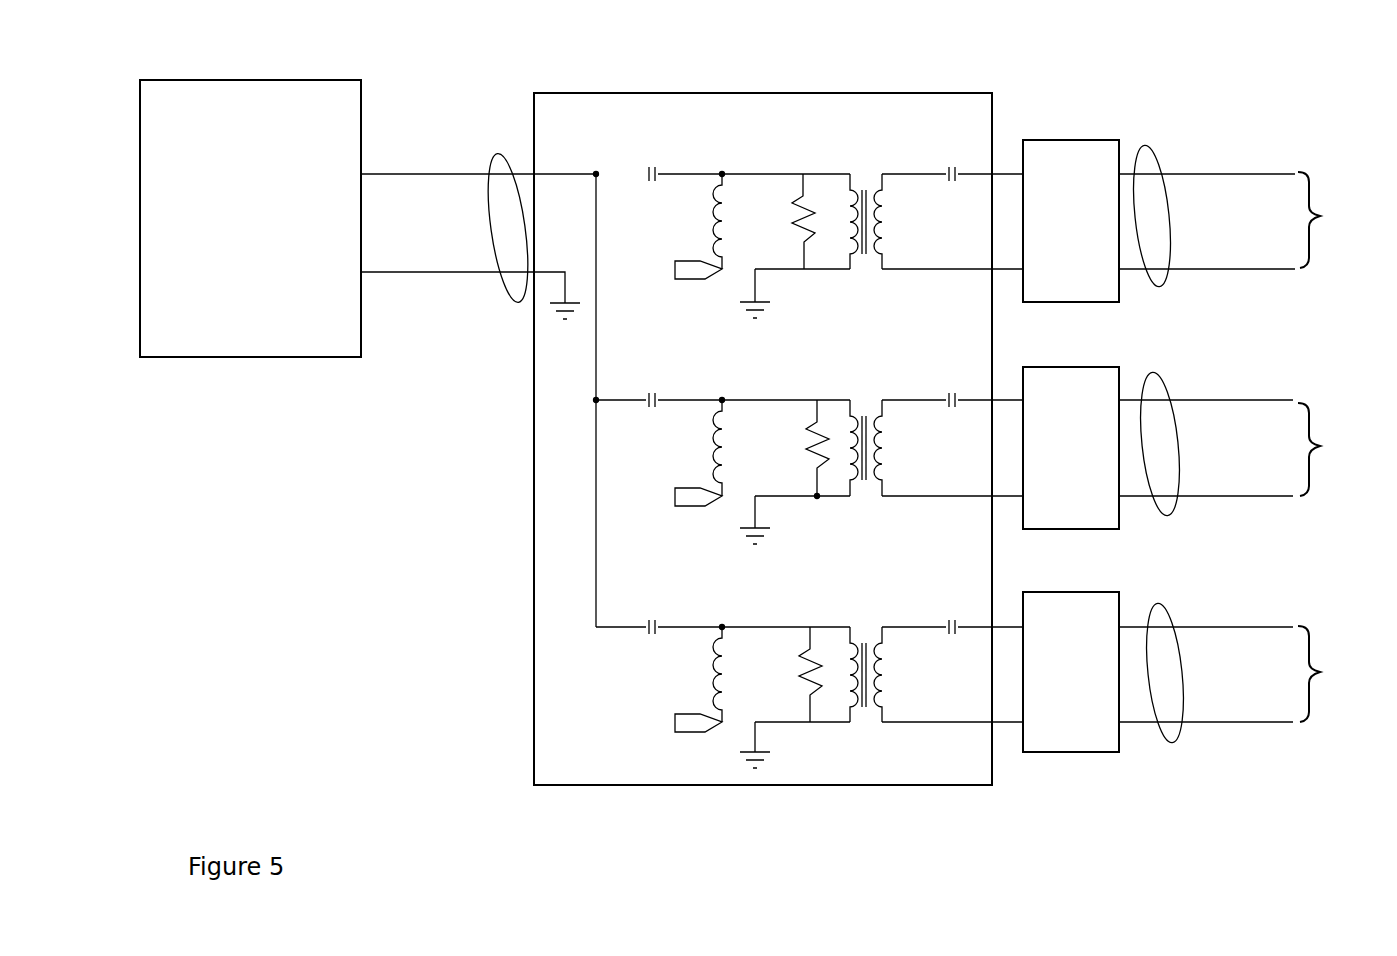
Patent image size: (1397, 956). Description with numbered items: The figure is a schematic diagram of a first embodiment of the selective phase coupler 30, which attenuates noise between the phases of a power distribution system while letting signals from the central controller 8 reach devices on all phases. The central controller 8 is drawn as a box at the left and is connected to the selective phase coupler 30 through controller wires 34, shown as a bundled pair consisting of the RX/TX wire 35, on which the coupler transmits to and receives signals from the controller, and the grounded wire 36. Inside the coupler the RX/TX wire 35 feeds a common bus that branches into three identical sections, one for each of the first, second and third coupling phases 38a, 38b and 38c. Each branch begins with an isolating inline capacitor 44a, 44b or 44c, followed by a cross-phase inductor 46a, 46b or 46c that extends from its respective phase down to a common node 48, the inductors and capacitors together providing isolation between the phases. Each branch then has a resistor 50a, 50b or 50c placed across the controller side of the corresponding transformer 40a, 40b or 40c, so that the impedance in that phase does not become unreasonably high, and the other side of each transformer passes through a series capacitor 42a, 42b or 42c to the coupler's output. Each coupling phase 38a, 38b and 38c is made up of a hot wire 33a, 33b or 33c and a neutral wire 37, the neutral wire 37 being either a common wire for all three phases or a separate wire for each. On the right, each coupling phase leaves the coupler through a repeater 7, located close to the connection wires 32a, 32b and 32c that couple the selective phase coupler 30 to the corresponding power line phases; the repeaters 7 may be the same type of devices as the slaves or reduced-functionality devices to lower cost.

The repeater 7 is at (1083, 237).
The central controller 8 is at (253, 232).
The selective phase coupler 30 is at (992, 93).
The connection wire 32a is at (1160, 150).
The connection wire 32b is at (1168, 373).
The connection wire 32c is at (1172, 606).
The hot wire 33a is at (1268, 173).
The hot wire 33b is at (1282, 398).
The hot wire 33c is at (1283, 622).
The controller wires 34 is at (510, 152).
The RX/TX wire 35 is at (381, 173).
The grounded wire 36 is at (387, 275).
The neutral wire 37 is at (1275, 272).
The first coupling phase 38a is at (1334, 220).
The second coupling phase 38b is at (1333, 449).
The third coupling phase 38c is at (1336, 674).
The transformer 40a is at (889, 213).
The transformer 40b is at (885, 444).
The transformer 40c is at (885, 668).
The capacitor 42a is at (953, 147).
The capacitor 42b is at (955, 364).
The capacitor 42c is at (955, 598).
The isolating inline capacitor 44a is at (647, 161).
The isolating inline capacitor 44b is at (655, 376).
The isolating inline capacitor 44c is at (651, 600).
The cross-phase inductor 46a is at (716, 214).
The cross-phase inductor 46b is at (720, 448).
The cross-phase inductor 46c is at (720, 676).
The common node 48 is at (690, 280).
The resistor 50a is at (806, 195).
The resistor 50b is at (808, 430).
The resistor 50c is at (805, 650).